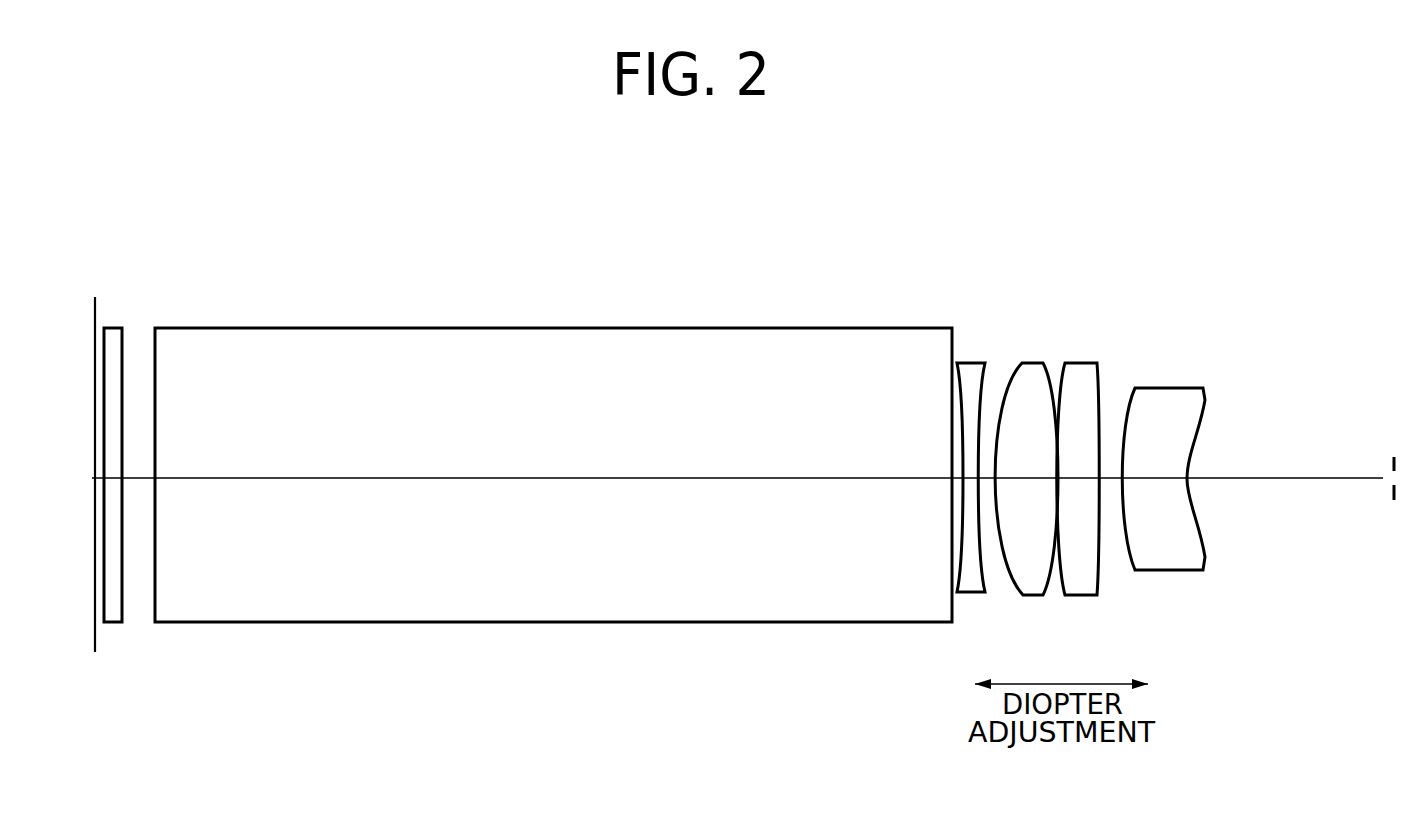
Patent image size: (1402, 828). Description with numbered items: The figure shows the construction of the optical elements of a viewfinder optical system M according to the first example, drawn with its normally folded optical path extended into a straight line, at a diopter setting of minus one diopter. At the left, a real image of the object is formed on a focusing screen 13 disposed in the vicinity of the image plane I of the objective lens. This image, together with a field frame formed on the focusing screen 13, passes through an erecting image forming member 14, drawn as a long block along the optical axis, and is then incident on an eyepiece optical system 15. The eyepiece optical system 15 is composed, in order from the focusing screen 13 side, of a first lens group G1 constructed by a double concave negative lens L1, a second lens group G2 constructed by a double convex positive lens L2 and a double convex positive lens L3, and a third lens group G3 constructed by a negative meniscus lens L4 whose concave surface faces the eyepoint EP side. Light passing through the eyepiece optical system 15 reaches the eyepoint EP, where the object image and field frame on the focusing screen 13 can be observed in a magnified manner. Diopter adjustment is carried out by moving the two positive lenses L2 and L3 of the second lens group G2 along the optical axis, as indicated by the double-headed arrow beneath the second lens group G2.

The image plane I is at (95, 310).
The focusing screen 13 is at (113, 326).
The erecting image forming member 14 is at (502, 327).
The eyepiece optical system 15 is at (1063, 262).
The viewfinder optical system M is at (587, 662).
The double concave negative lens L1 is at (970, 373).
The double convex positive lens L2 is at (1032, 373).
The double convex positive lens L3 is at (1082, 373).
The negative meniscus lens L4 is at (1177, 388).
The first lens group G1 is at (976, 467).
The second lens group G2 is at (1055, 480).
The third lens group G3 is at (1163, 460).
The eyepoint EP is at (1393, 468).